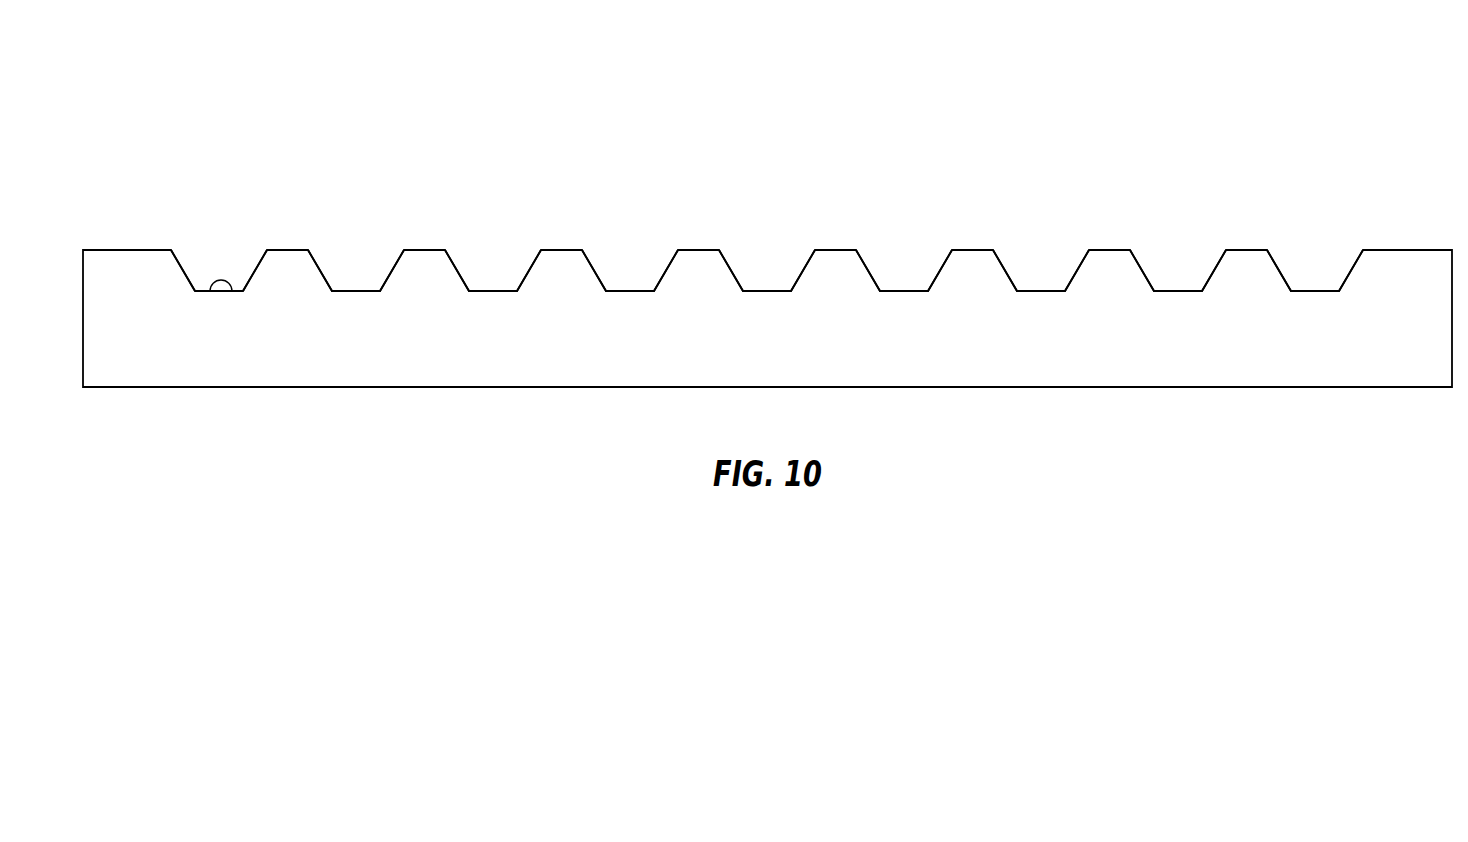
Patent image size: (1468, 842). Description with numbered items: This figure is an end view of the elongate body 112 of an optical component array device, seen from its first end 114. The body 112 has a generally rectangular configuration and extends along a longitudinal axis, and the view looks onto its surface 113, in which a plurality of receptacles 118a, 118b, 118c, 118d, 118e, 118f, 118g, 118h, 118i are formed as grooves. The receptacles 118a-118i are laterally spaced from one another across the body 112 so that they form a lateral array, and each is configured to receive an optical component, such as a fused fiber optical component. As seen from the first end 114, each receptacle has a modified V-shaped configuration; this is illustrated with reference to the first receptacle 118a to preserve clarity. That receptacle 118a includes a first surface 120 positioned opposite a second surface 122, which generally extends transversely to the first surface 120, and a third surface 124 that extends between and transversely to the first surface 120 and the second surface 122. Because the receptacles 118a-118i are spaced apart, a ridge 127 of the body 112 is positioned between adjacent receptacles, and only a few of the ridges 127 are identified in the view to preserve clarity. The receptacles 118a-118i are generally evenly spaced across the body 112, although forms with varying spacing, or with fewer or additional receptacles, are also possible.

The elongate body 112 is at (1380, 84).
The surface 113 is at (1400, 250).
The first end 114 is at (473, 348).
The receptacle 118a is at (216, 268).
The receptacle 118b is at (357, 278).
The receptacle 118c is at (494, 278).
The receptacle 118d is at (631, 278).
The receptacle 118e is at (768, 278).
The receptacle 118f is at (905, 278).
The receptacle 118g is at (1042, 278).
The receptacle 118h is at (1179, 278).
The receptacle 118i is at (1316, 278).
The first surface 120 is at (187, 253).
The second surface 122 is at (255, 253).
The third surface 124 is at (232, 291).
The ridge 127 is at (424, 250).